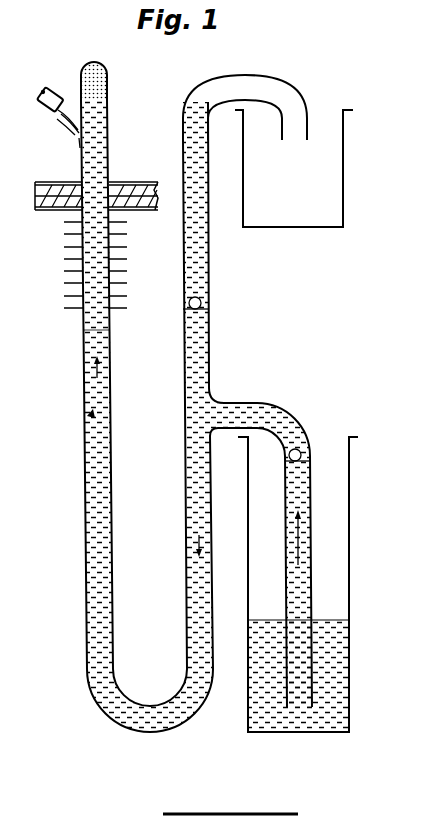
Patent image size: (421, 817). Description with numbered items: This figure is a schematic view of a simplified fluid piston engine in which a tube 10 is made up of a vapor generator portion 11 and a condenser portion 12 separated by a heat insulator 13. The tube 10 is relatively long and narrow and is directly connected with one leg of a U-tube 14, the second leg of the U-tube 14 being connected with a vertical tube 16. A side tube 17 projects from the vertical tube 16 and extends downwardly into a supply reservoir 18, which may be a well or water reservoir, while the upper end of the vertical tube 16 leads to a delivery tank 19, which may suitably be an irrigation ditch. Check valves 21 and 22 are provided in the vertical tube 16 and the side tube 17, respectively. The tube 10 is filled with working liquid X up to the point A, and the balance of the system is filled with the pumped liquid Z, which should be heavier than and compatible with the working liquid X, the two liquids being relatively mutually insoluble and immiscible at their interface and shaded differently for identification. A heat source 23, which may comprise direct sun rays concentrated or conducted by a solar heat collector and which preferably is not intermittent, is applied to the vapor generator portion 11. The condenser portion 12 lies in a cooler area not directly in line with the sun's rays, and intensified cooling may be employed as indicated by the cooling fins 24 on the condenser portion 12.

The tube 10 is at (113, 103).
The vapor generator portion 11 is at (108, 152).
The condenser portion 12 is at (109, 330).
The heat insulator 13 is at (127, 182).
The U-tube 14 is at (144, 730).
The vertical tube 16 is at (206, 384).
The side tube 17 is at (249, 405).
The supply reservoir 18 is at (318, 725).
The delivery tank 19 is at (316, 228).
The check valve 21 is at (209, 300).
The check valve 22 is at (300, 450).
The heat source 23 is at (44, 120).
The cooling fins 24 is at (125, 272).
The working liquid X is at (90, 329).
The point A is at (91, 414).
The pumped liquid Z is at (188, 705).